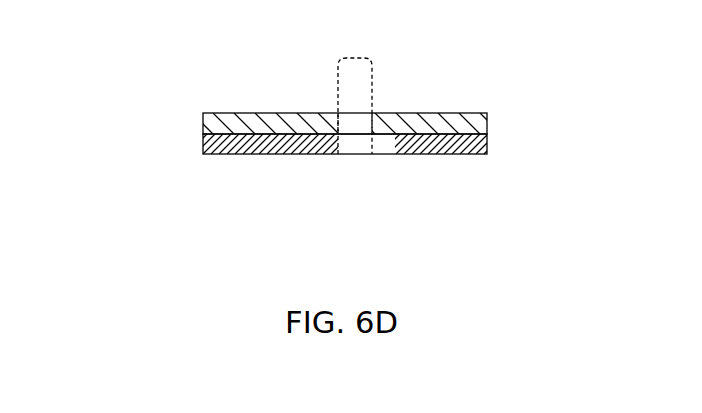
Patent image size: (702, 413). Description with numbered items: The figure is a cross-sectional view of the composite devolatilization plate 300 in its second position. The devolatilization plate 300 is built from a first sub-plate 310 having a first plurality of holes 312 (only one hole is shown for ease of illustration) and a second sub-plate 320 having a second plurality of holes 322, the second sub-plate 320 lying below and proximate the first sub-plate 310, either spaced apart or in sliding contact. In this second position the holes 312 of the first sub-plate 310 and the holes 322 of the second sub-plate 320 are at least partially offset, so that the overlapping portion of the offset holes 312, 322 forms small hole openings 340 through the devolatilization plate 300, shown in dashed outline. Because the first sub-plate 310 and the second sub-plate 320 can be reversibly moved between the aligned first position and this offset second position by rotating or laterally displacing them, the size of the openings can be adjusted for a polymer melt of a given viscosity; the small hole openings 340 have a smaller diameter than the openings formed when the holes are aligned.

The composite devolatilization plate 300 is at (301, 147).
The first sub-plate 310 is at (203, 124).
The first plurality of holes 312 is at (333, 122).
The second sub-plate 320 is at (203, 144).
The second plurality of holes 322 is at (379, 146).
The small hole openings 340 is at (355, 57).